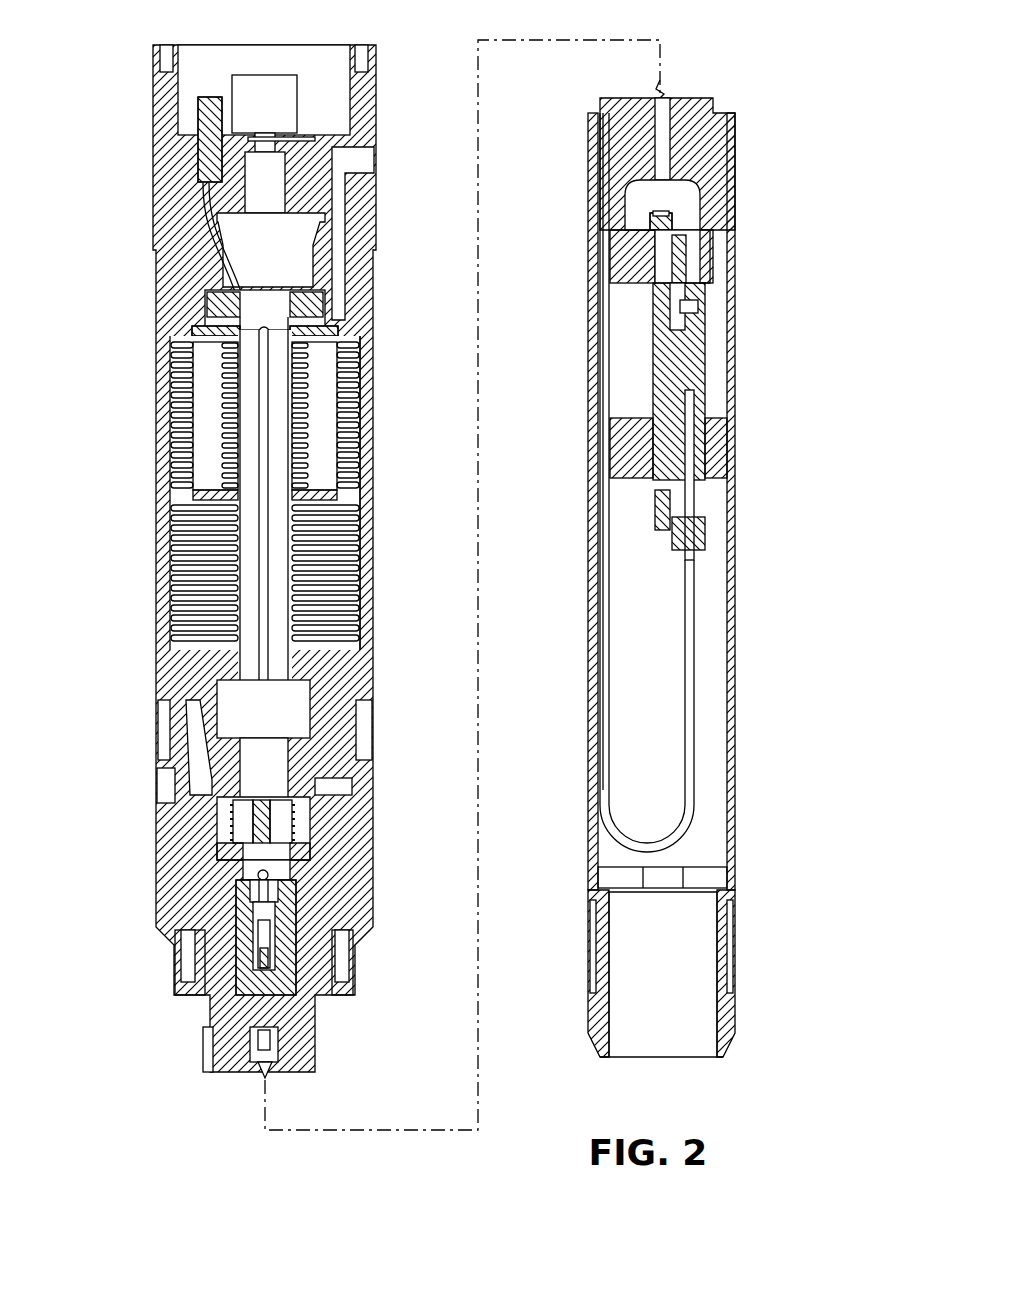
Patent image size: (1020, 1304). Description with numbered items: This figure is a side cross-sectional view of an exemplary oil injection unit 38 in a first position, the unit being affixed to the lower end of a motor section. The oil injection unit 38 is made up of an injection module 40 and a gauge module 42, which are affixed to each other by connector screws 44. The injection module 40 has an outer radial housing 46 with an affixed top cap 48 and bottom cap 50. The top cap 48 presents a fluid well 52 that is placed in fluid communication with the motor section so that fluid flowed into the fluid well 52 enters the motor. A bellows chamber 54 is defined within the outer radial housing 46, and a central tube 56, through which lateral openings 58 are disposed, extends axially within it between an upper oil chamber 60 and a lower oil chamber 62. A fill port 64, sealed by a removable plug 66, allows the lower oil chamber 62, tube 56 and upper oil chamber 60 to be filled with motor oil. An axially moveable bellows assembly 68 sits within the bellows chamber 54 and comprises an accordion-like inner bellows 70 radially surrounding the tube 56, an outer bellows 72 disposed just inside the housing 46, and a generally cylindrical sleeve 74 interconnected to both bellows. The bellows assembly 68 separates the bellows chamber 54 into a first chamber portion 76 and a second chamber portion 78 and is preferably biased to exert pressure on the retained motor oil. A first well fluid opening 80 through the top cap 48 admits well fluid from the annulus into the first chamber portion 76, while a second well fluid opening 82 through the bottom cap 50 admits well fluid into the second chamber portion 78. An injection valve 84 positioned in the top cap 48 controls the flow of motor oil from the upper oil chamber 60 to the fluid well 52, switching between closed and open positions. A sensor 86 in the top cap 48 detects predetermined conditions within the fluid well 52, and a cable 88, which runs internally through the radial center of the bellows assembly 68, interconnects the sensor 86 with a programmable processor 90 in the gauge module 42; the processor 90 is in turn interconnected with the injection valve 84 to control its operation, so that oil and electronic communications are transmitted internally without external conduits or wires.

The oil injection unit 38 is at (263, 542).
The injection module 40 is at (258, 542).
The gauge module 42 is at (668, 577).
The connector screws 44 is at (183, 965).
The outer radial housing 46 is at (267, 558).
The top cap 48 is at (229, 558).
The bottom cap 50 is at (182, 872).
The fluid well 52 is at (325, 95).
The bellows chamber 54 is at (175, 410).
The central tube 56 is at (250, 578).
The lateral openings 58 is at (275, 330).
The upper oil chamber 60 is at (305, 262).
The lower oil chamber 62 is at (305, 705).
The fill port 64 is at (342, 790).
The removable plug 66 is at (368, 790).
The bellows assembly 68 is at (362, 468).
The inner bellows 70 is at (215, 447).
The outer bellows 72 is at (315, 565).
The cylindrical sleeve 74 is at (330, 390).
The first chamber portion 76 is at (190, 337).
The second chamber portion 78 is at (175, 640).
The first well fluid opening 80 is at (360, 160).
The second well fluid opening 82 is at (190, 786).
The injection valve 84 is at (248, 75).
The sensor 86 is at (207, 124).
The cable 88 is at (258, 700).
The processor 90 is at (700, 400).